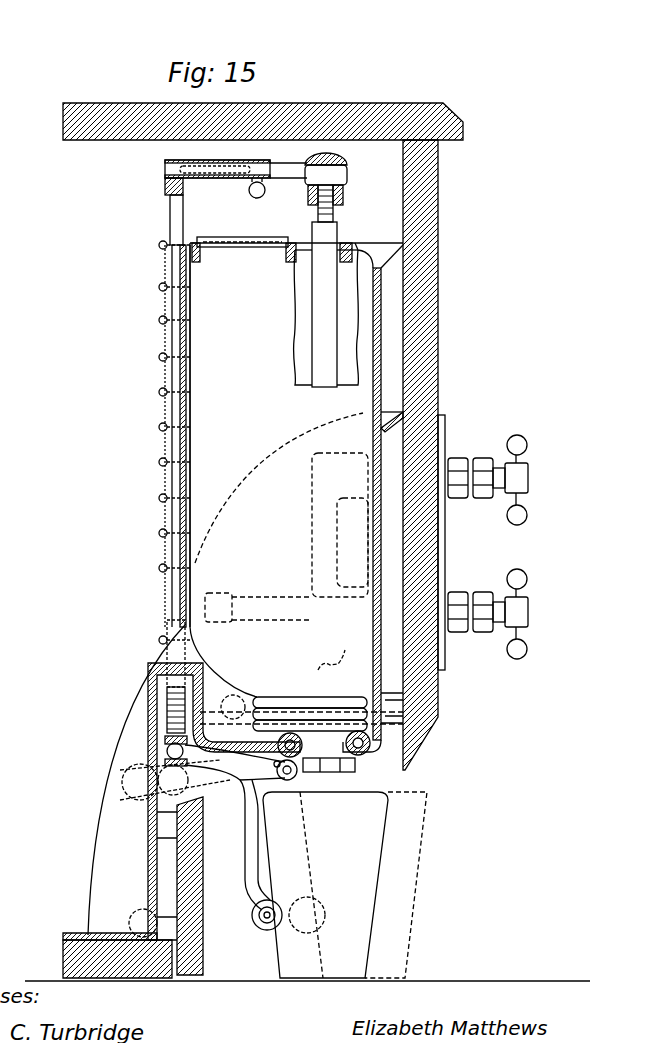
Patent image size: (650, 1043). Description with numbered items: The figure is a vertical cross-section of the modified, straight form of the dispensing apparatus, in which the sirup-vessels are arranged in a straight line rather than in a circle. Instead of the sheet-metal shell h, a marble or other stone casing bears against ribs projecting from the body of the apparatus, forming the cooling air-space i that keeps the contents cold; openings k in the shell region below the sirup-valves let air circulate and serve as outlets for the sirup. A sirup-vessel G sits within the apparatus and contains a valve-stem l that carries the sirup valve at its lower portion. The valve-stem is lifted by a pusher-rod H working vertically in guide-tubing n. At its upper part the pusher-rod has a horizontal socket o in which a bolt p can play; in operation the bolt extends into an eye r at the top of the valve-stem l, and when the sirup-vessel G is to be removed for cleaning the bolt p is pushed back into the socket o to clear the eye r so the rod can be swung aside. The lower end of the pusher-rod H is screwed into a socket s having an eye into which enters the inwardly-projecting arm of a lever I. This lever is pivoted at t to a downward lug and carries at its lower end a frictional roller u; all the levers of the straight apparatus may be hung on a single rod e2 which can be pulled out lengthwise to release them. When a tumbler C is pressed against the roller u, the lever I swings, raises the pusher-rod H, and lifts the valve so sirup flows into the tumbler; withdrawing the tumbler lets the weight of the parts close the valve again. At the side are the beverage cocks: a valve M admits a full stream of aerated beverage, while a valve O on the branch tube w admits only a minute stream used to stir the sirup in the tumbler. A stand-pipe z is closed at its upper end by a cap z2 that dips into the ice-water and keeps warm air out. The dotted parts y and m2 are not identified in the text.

The outer shell h is at (424, 455).
The valve O is at (500, 480).
The valve M is at (540, 608).
The pusher-rod H is at (182, 402).
The horizontal socket o is at (217, 160).
The bolt p is at (280, 180).
The eye r is at (332, 187).
The valve-stem l is at (326, 304).
The sirup-vessel G is at (296, 467).
The air-space i is at (373, 497).
The guide-tubing n is at (171, 442).
The branch tube w is at (286, 537).
The passage y is at (331, 666).
The coupling box m2 is at (329, 753).
The stand-pipe z is at (328, 740).
The openings k is at (392, 720).
The cap z2 is at (224, 780).
The socket s is at (172, 751).
The lever I is at (235, 827).
The rod e2 is at (298, 775).
The pivot t is at (274, 769).
The frictional roller u is at (267, 924).
The tumbler C is at (345, 885).